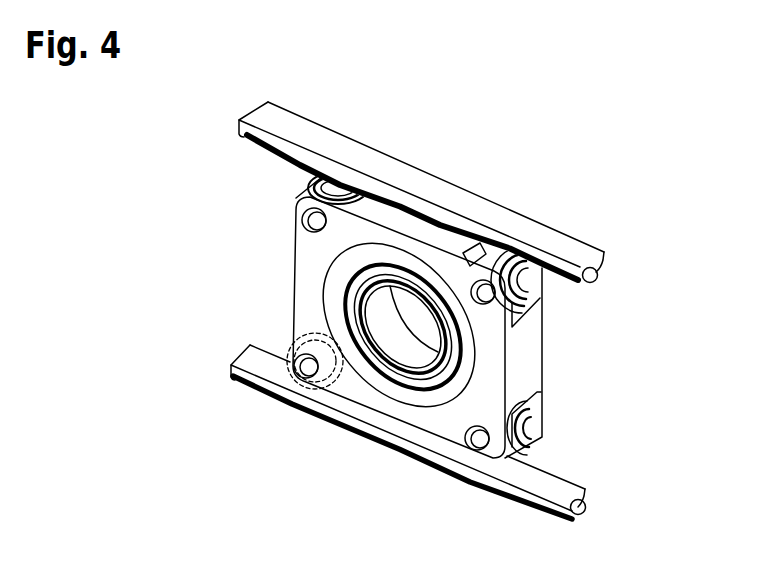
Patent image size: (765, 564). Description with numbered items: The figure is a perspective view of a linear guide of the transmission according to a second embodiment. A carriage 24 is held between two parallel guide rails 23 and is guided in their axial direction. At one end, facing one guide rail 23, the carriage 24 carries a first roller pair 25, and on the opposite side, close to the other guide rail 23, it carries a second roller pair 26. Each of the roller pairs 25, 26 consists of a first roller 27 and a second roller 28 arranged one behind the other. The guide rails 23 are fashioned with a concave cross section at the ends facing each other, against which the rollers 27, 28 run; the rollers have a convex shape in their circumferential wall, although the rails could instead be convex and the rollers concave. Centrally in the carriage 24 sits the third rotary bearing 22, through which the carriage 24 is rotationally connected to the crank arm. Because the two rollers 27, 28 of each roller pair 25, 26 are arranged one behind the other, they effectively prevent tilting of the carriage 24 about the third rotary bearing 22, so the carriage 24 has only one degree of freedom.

The third rotary bearing 22 is at (412, 358).
The guide rails 23 is at (240, 378).
The carriage 24 is at (490, 423).
The first roller pair 25 is at (526, 250).
The second roller pair 26 is at (313, 382).
The first roller 27 is at (324, 170).
The second roller 28 is at (544, 278).